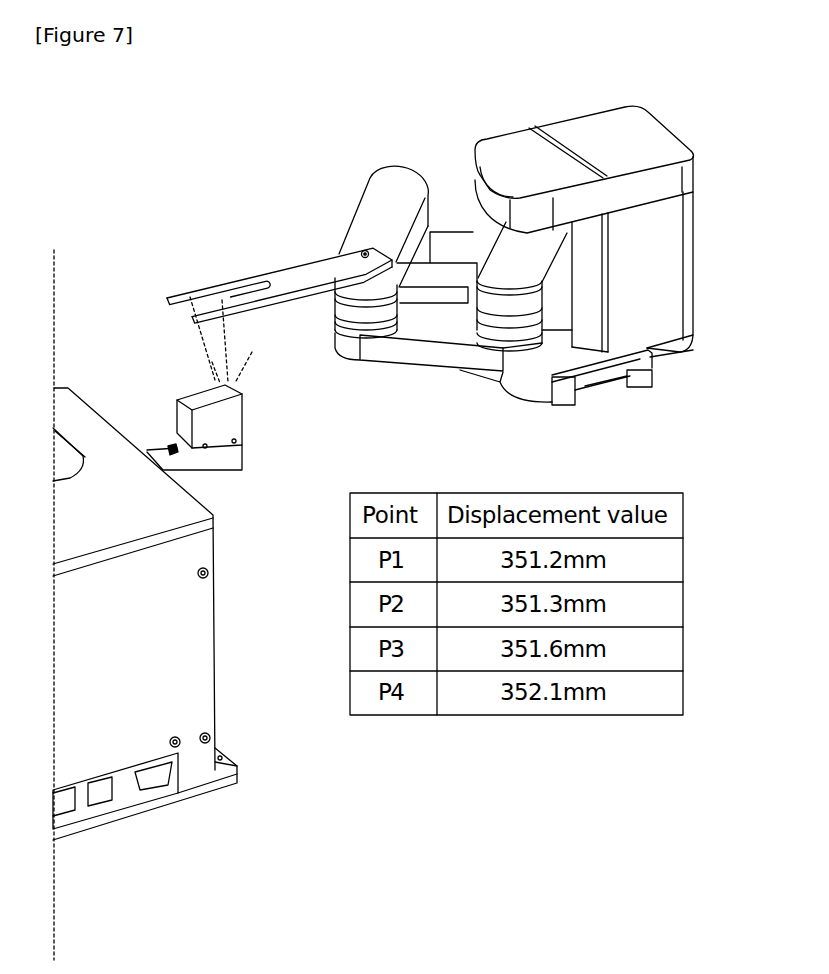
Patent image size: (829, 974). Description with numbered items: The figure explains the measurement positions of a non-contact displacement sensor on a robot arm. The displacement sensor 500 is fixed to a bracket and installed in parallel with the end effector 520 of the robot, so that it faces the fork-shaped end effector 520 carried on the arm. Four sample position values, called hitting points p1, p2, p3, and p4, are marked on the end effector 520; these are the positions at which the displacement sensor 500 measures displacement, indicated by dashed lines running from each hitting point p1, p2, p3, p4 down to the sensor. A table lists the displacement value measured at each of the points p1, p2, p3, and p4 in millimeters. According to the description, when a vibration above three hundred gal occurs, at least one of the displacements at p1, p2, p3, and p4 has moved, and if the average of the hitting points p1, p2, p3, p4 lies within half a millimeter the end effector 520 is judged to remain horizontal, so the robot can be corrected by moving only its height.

The displacement sensor 500 is at (257, 412).
The end effector 520 is at (282, 242).
The hitting point p1 is at (212, 353).
The hitting point p2 is at (182, 312).
The hitting point p3 is at (259, 350).
The hitting point p4 is at (213, 308).